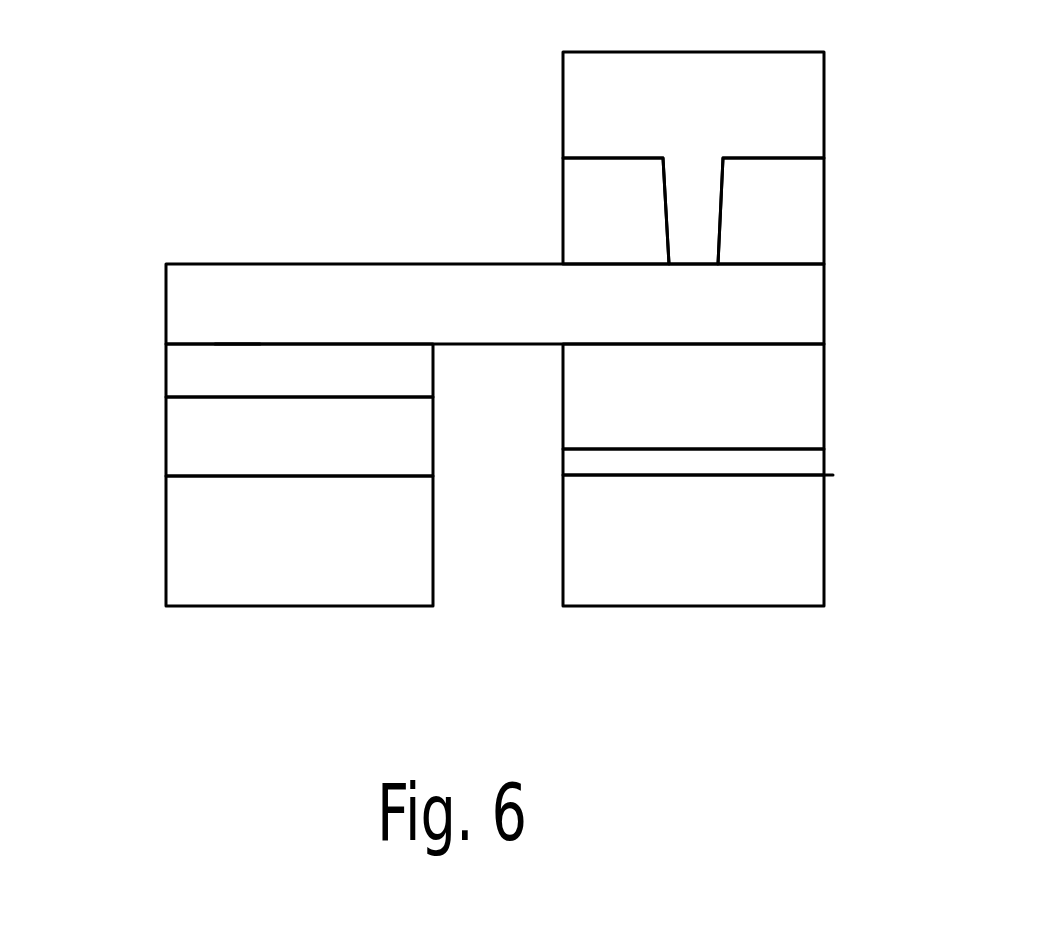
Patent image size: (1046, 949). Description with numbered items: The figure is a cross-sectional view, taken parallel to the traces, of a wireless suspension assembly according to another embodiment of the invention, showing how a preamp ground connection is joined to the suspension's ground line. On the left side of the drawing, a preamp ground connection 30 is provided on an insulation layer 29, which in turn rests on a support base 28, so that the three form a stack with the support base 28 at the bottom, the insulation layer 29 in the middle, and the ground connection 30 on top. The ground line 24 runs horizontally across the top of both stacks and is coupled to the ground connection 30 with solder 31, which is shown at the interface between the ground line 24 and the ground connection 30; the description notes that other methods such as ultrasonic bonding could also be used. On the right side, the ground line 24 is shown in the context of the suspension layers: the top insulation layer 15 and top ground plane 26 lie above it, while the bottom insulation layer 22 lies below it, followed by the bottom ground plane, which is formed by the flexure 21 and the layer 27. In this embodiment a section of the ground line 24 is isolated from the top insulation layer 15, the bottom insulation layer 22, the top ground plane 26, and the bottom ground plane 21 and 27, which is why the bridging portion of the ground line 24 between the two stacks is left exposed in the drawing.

The top ground plane 26 is at (790, 87).
The top insulation layer 15 is at (790, 200).
The ground line 24 is at (762, 293).
The solder 31 is at (236, 340).
The preamp ground connection 30 is at (221, 372).
The insulation layer 29 is at (198, 440).
The support base 28 is at (221, 523).
The bottom insulation layer 22 is at (780, 393).
The bottom ground plane 27 is at (684, 461).
The flexure 21 is at (725, 543).